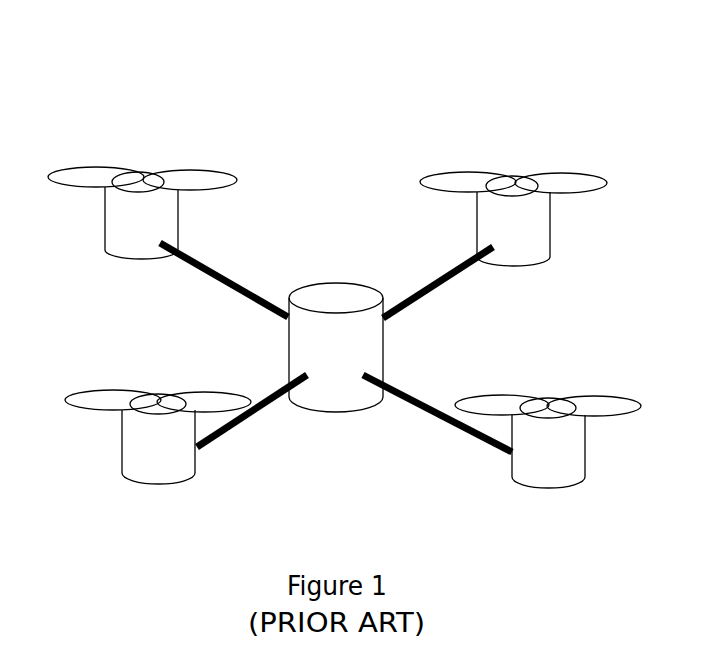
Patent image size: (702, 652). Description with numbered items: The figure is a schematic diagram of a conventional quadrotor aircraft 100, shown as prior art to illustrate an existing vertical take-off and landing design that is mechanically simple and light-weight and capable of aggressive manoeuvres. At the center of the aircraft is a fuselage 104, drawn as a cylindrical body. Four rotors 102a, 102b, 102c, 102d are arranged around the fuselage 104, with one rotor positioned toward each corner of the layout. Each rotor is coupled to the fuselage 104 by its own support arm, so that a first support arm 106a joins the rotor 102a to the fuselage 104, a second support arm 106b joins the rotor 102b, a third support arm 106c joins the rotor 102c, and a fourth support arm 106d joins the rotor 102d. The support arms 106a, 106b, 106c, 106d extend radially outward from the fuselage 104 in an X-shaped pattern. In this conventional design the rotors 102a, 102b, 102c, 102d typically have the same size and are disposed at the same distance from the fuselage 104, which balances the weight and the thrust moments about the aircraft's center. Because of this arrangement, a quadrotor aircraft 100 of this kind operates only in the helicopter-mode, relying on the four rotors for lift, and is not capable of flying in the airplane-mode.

The conventional quadrotor aircraft 100 is at (116, 88).
The rotor 102a is at (532, 228).
The rotor 102b is at (565, 450).
The rotor 102c is at (138, 447).
The rotor 102d is at (123, 207).
The fuselage 104 is at (307, 338).
The support arm 106a is at (435, 280).
The support arm 106b is at (433, 417).
The support arm 106c is at (230, 428).
The support arm 106d is at (234, 280).